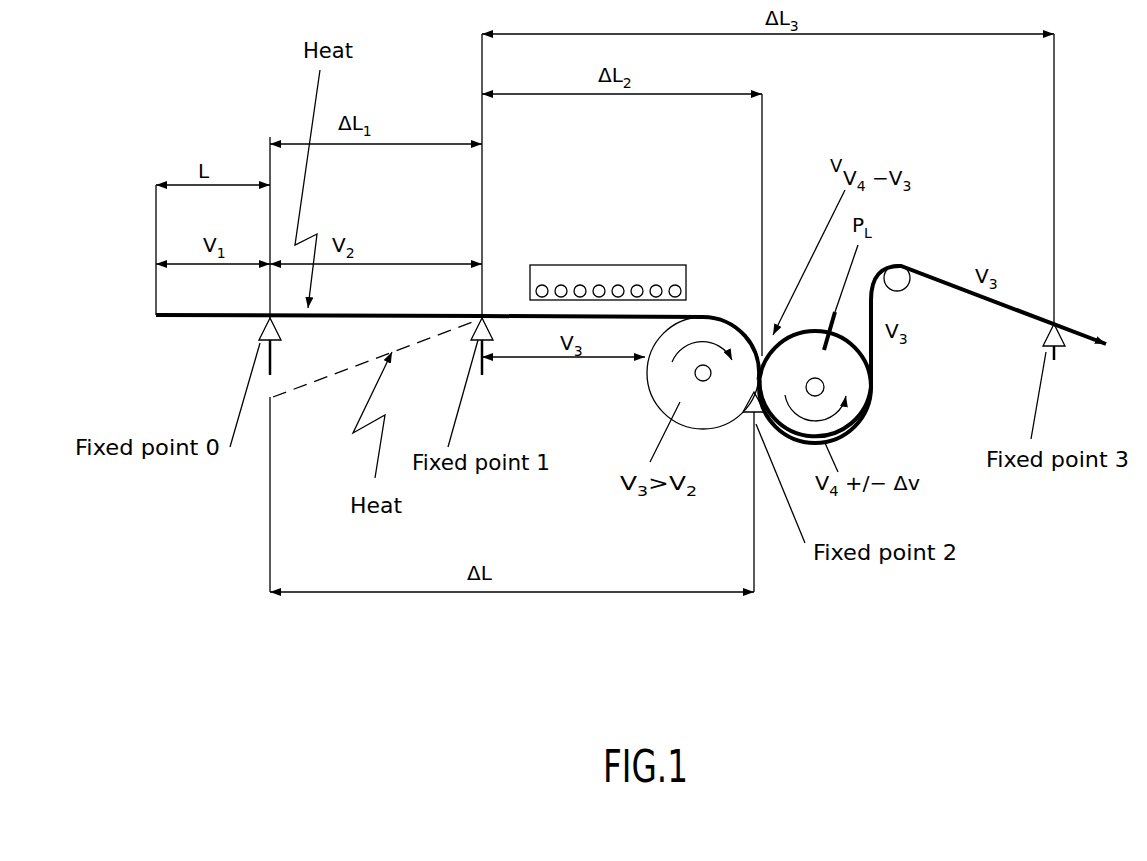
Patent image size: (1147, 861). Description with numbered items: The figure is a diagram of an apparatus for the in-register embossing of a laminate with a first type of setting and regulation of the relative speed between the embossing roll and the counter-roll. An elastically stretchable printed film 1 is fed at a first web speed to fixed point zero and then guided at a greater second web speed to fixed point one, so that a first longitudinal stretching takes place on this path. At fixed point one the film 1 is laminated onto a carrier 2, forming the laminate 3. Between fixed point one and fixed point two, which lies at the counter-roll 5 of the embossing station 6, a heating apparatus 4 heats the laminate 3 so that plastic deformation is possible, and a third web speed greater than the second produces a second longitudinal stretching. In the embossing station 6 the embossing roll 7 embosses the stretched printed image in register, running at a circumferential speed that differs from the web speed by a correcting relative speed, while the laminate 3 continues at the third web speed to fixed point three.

The film 1 is at (190, 320).
The carrier 2 is at (375, 358).
The laminate 3 is at (490, 312).
The heating apparatus 4 is at (568, 272).
The counter-roll 5 is at (721, 334).
The embossing station 6 is at (780, 290).
The embossing roll 7 is at (848, 371).